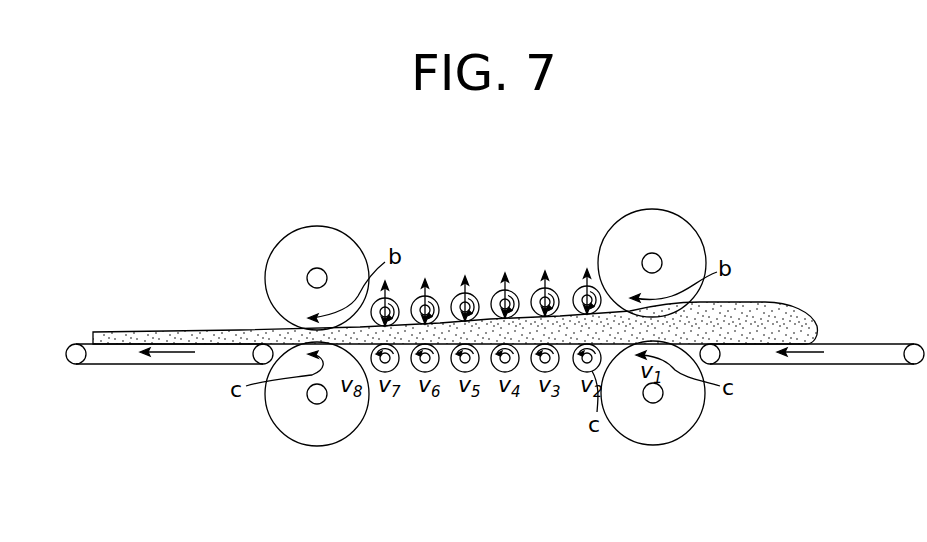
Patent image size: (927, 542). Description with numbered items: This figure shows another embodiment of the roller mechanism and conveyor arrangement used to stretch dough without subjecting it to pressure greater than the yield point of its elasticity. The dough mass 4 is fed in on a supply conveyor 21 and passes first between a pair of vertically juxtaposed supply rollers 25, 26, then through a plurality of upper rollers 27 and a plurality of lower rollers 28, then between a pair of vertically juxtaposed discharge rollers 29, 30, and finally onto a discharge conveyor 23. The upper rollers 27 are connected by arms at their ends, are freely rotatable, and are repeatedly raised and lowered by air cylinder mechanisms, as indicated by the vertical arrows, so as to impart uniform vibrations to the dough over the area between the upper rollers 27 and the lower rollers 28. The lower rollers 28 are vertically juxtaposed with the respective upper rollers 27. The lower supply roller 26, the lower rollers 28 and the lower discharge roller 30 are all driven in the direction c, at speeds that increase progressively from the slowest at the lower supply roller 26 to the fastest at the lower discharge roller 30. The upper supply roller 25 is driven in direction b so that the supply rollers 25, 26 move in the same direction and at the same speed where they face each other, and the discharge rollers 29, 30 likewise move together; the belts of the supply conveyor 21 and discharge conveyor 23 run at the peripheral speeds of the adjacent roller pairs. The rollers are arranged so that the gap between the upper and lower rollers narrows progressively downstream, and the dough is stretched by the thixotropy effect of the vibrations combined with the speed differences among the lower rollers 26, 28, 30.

The dough mass 4 is at (788, 308).
The supply conveyor 21 is at (850, 366).
The discharge conveyor 23 is at (118, 365).
The upper supply roller 25 is at (650, 209).
The lower supply roller 26 is at (650, 445).
The upper rollers 27 is at (577, 287).
The lower rollers 28 is at (578, 371).
The upper discharge roller 29 is at (317, 226).
The lower discharge roller 30 is at (317, 446).